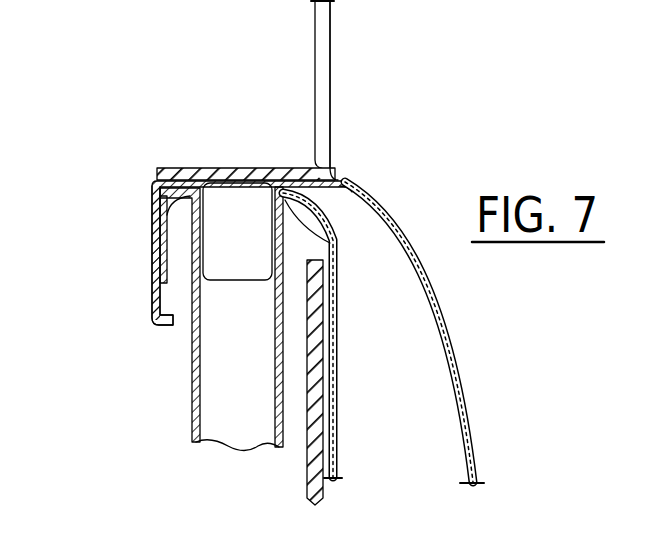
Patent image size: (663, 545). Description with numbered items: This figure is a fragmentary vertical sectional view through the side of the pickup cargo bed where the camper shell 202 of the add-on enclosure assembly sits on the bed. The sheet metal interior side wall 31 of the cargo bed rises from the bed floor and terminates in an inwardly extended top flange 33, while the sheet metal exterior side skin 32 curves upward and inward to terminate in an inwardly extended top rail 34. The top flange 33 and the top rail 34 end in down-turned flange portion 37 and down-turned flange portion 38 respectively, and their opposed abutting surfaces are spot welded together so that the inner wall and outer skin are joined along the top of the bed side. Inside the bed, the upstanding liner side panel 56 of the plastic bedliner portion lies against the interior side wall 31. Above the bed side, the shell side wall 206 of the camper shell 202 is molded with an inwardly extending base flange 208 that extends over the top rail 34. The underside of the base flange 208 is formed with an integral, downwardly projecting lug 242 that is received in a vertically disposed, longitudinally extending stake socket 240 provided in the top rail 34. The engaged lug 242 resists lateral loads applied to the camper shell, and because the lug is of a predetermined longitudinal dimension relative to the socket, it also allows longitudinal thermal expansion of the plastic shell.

The camper shell 202 is at (330, 47).
The shell side wall 206 is at (330, 88).
The base flange 208 is at (176, 168).
The stake socket 240 is at (247, 168).
The lug 242 is at (238, 262).
The top rail 34 is at (332, 172).
The top flange 33 is at (333, 232).
The down-turned flange portion 38 is at (152, 256).
The down-turned flange portion 37 is at (152, 281).
The interior side wall 31 is at (338, 388).
The exterior side skin 32 is at (466, 443).
The liner side panel 56 is at (310, 465).